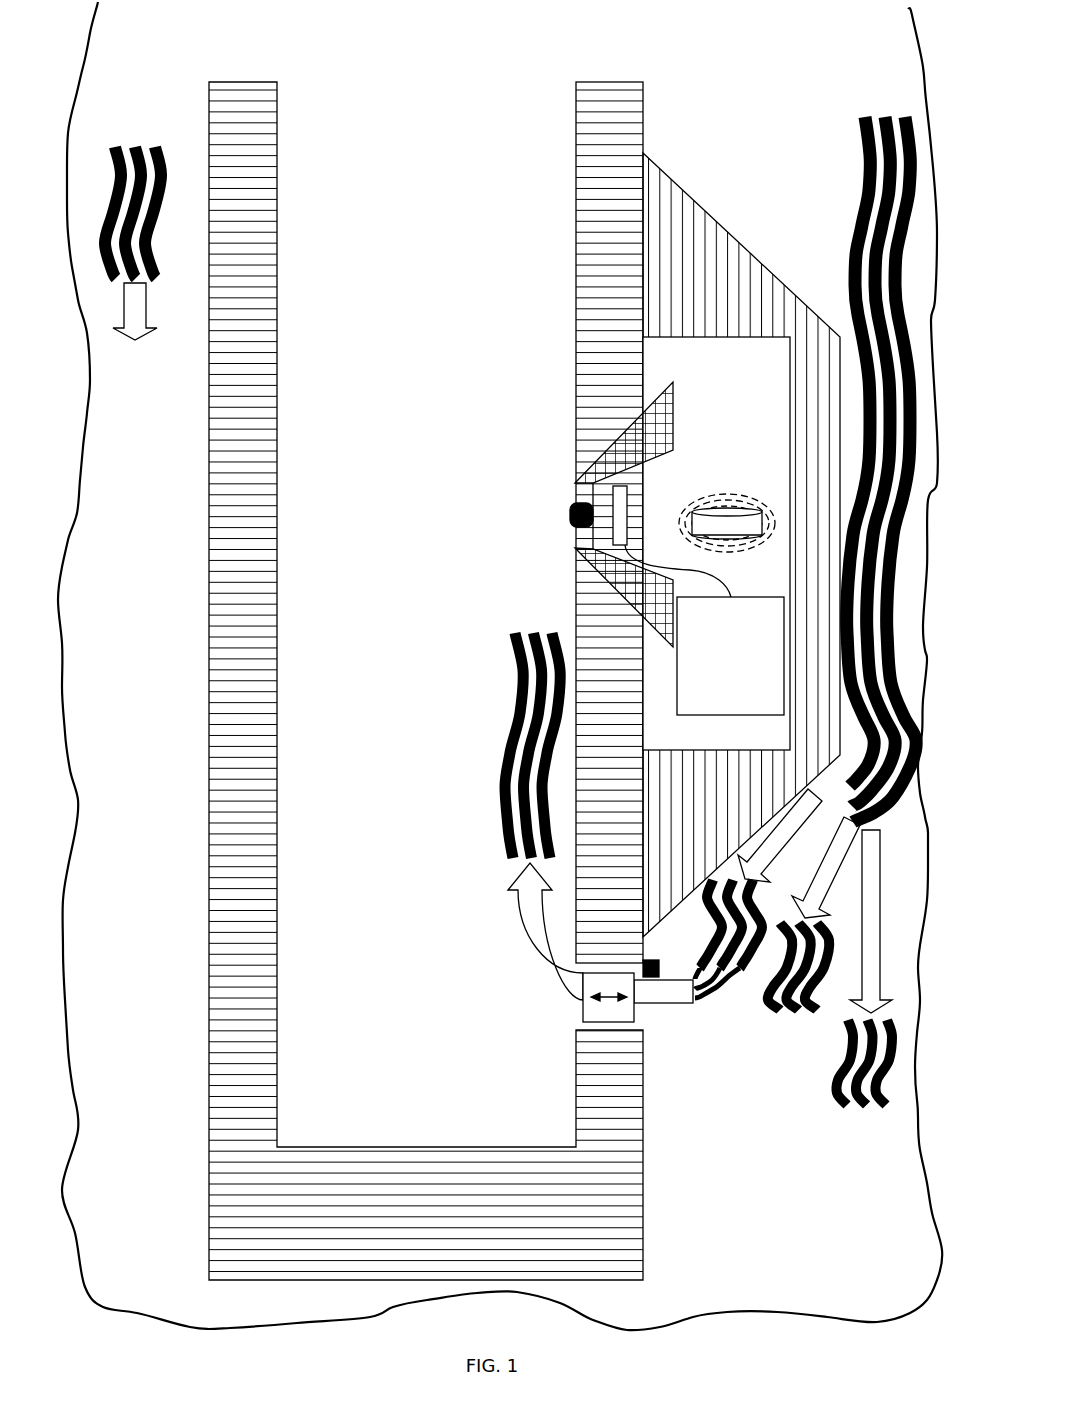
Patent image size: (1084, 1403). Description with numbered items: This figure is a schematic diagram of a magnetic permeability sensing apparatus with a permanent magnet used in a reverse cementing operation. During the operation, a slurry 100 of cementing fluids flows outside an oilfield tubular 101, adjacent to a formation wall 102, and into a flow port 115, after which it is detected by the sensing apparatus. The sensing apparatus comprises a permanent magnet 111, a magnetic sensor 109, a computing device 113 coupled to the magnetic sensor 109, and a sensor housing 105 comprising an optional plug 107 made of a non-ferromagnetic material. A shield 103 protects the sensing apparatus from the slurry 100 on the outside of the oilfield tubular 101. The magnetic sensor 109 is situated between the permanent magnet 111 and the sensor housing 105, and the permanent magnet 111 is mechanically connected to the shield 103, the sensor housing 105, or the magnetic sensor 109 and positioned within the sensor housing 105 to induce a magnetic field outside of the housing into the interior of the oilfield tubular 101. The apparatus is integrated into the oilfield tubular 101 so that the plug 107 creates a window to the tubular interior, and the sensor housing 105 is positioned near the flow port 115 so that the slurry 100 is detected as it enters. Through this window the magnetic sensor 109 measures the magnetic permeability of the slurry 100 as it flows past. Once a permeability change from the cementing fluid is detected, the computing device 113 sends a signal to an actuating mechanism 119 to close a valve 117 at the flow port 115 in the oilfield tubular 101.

The slurry 100 is at (510, 581).
The oilfield tubular 101 is at (573, 263).
The formation wall 102 is at (83, 480).
The shield 103 is at (738, 242).
The sensor housing 105 is at (575, 483).
The plug 107 is at (568, 515).
The magnetic sensor 109 is at (628, 510).
The permanent magnet 111 is at (745, 490).
The computing device 113 is at (730, 656).
The flow port 115 is at (643, 1028).
The valve 117 is at (580, 1017).
The actuating mechanism 119 is at (653, 960).